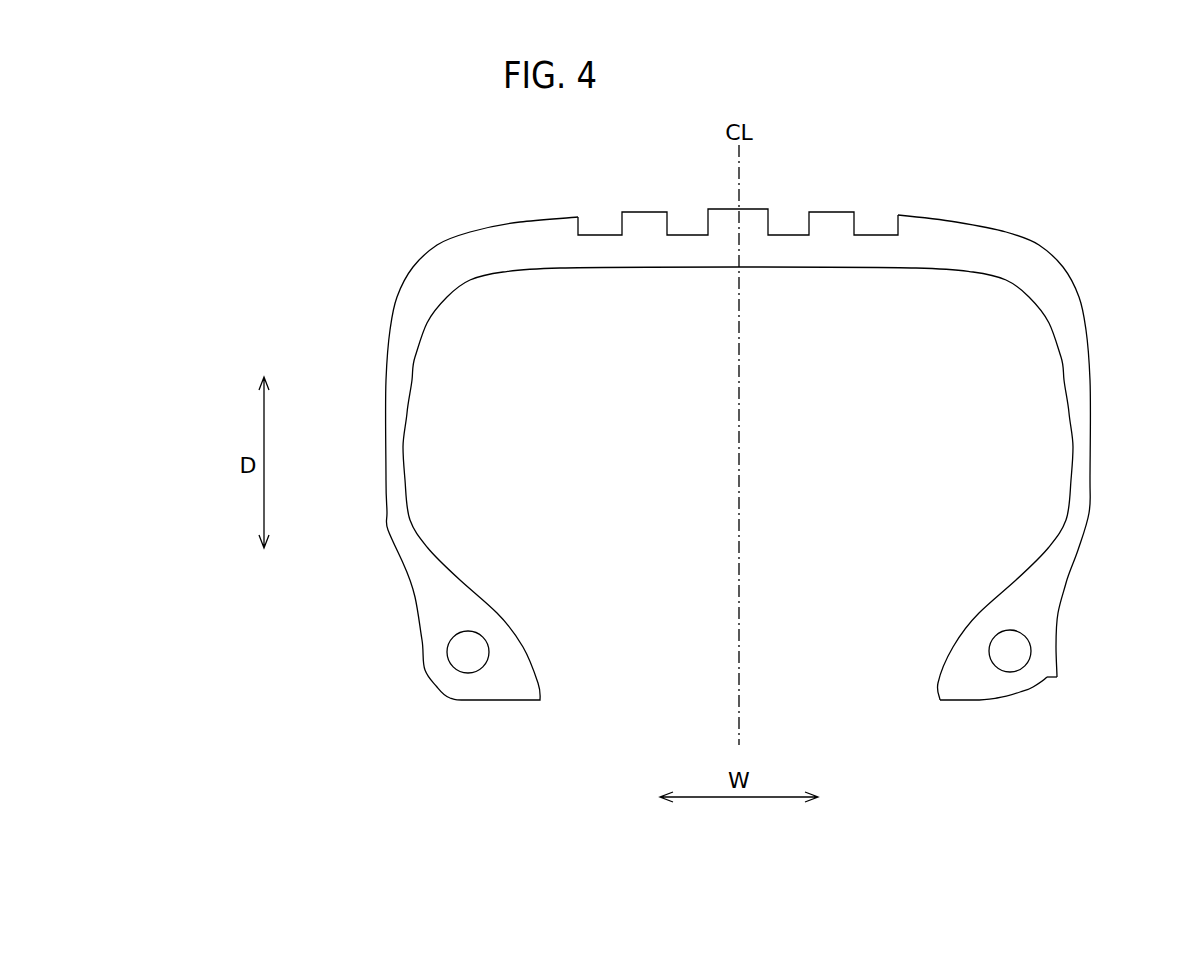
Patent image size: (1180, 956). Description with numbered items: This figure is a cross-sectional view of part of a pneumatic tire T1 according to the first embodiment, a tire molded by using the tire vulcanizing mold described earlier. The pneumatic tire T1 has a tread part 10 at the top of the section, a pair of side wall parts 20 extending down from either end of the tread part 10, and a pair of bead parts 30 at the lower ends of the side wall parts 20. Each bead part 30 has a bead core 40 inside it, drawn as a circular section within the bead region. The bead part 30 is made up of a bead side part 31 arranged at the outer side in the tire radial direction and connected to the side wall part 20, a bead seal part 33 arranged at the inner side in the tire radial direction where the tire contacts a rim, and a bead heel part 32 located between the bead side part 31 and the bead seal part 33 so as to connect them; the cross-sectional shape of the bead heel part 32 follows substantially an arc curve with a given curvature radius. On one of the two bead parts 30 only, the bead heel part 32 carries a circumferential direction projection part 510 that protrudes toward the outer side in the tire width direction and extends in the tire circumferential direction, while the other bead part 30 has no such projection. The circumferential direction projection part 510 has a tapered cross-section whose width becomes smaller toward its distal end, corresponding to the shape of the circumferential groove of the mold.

The pneumatic tire T1 is at (1043, 191).
The tread part 10 is at (693, 250).
The side wall part 20 is at (407, 368).
The bead part 30 is at (463, 612).
The bead core 40 is at (475, 653).
The bead side part 31 is at (1079, 628).
The bead heel part 32 is at (1069, 697).
The bead seal part 33 is at (1003, 714).
The circumferential direction projection part 510 is at (1058, 674).